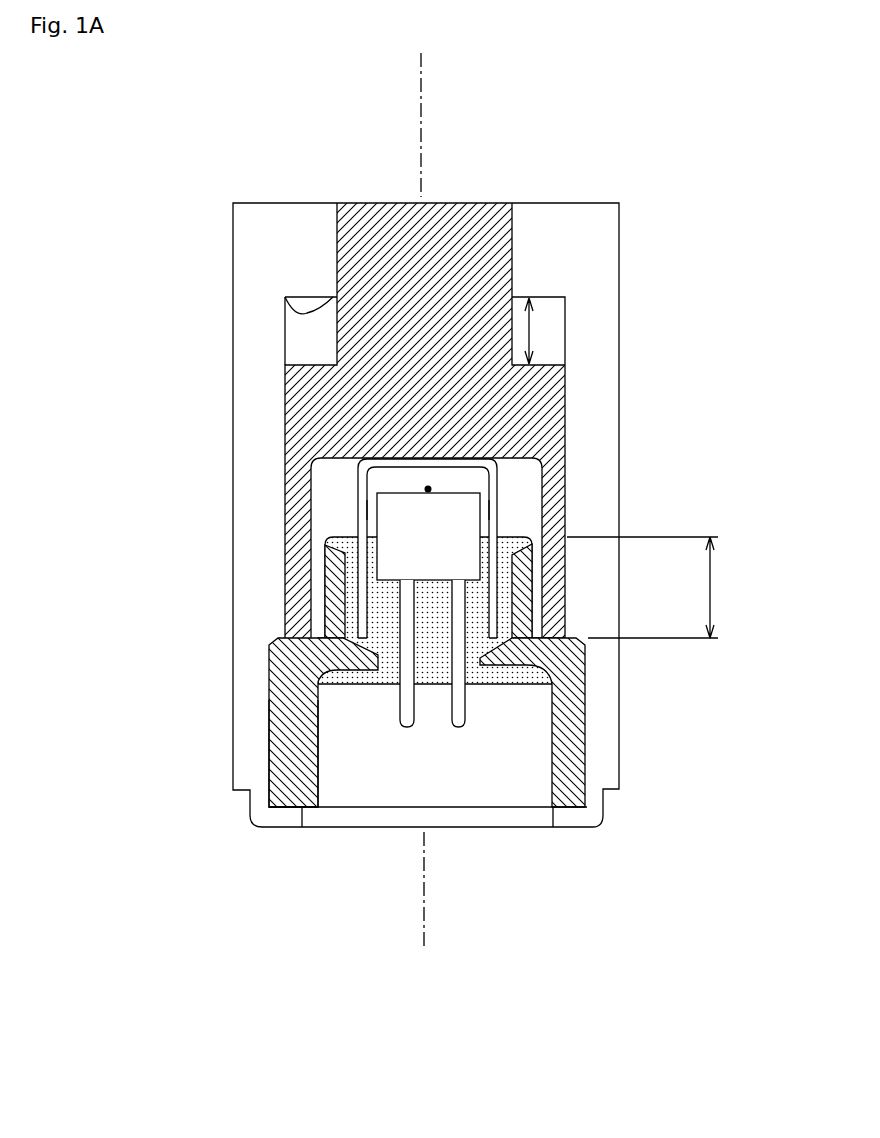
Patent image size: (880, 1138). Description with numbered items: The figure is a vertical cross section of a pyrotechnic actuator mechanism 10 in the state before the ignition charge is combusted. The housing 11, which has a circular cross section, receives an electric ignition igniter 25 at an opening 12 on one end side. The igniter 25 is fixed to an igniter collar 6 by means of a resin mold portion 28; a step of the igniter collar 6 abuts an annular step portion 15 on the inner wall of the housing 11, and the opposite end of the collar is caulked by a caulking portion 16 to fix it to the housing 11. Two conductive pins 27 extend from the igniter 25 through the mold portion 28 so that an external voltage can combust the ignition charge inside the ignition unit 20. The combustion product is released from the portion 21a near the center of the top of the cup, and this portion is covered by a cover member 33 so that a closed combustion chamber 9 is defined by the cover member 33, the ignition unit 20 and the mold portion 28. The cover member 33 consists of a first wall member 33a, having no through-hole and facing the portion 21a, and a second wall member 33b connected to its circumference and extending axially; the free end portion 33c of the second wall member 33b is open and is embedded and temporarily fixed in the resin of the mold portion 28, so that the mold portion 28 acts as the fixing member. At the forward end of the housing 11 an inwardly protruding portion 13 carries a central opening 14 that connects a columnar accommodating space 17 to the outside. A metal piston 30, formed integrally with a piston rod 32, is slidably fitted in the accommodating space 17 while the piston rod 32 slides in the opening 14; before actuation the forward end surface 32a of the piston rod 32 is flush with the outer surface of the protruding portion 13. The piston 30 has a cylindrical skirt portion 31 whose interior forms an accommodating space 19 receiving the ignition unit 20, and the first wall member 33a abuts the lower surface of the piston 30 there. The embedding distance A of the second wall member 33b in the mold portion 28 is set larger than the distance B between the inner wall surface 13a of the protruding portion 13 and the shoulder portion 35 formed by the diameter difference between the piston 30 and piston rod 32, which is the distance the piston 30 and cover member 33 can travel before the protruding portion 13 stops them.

The igniter collar 6 is at (300, 740).
The combustion chamber 9 is at (385, 487).
The pyrotechnic actuator mechanism 10 is at (562, 167).
The housing 11 is at (590, 322).
The opening 12 is at (477, 815).
The protruding portion 13 is at (280, 227).
The inner wall surface of the protruding portion 13a is at (565, 312).
The opening 14 is at (285, 297).
The annular step portion 15 is at (275, 665).
The caulking portion 16 is at (282, 817).
The accommodating space 17 is at (286, 340).
The accommodating space 19 is at (320, 478).
The ignition unit 20 is at (457, 523).
The portion 21a is at (430, 489).
The igniter 25 is at (553, 723).
The conductive pin 27 is at (463, 727).
The mold portion 28 is at (386, 685).
The piston 30 is at (565, 402).
The skirt portion 31 is at (567, 552).
The piston rod 32 is at (373, 343).
The forward end surface of the piston rod 32a is at (438, 203).
The cover member 33 is at (498, 485).
The first wall member 33a is at (489, 448).
The second wall member 33b is at (360, 523).
The free end portion 33c is at (360, 640).
The shoulder portion 35 is at (548, 362).